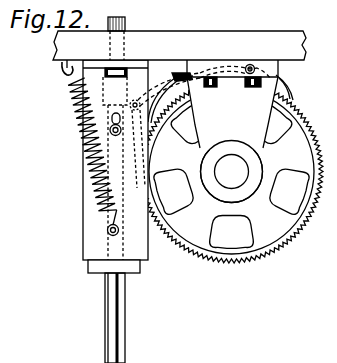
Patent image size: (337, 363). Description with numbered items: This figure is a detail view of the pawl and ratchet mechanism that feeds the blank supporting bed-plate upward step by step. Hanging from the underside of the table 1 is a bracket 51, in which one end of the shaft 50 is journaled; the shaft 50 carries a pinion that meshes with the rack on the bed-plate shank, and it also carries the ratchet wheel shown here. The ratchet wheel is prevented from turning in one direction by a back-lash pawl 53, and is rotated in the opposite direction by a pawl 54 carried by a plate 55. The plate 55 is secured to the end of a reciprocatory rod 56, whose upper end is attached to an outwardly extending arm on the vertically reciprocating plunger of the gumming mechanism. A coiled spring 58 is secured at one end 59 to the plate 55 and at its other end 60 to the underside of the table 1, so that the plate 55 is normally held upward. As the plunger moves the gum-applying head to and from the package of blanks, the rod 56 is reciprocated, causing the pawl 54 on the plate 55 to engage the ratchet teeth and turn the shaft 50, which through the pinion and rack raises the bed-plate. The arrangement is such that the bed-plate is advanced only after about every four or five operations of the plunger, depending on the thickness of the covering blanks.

The table 1 is at (184, 40).
The shaft 50 is at (231, 171).
The bracket 51 is at (232, 105).
The back-lash pawl 53 is at (289, 91).
The pawl 54 is at (140, 188).
The plate 55 is at (140, 269).
The reciprocatory rod 56 is at (121, 330).
The coiled spring 58 is at (80, 121).
The spring end secured to plate 59 is at (107, 230).
The spring end secured to table 60 is at (57, 72).